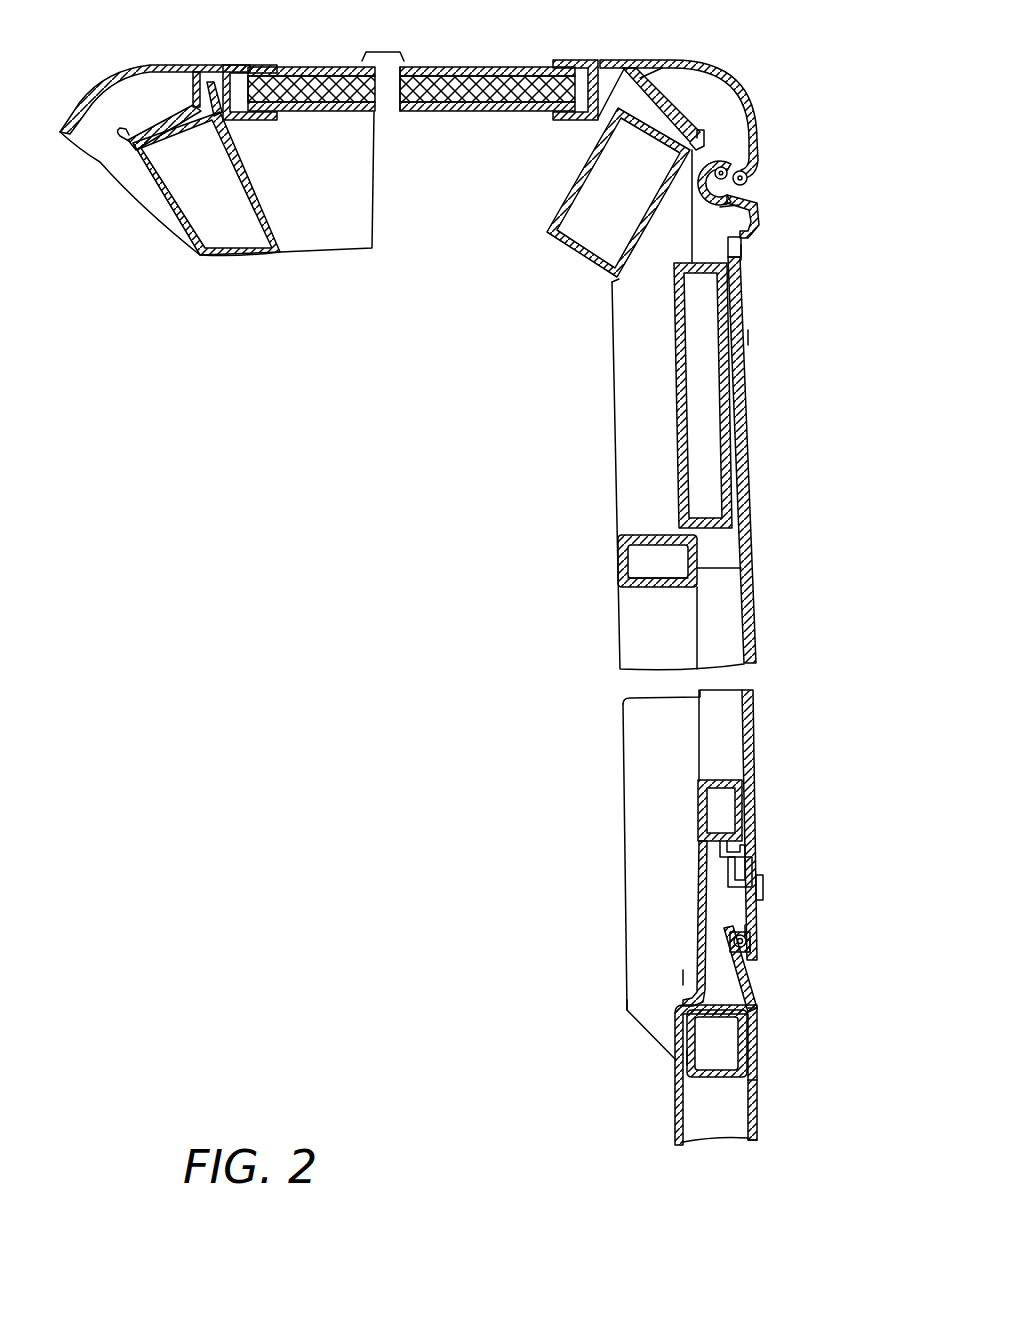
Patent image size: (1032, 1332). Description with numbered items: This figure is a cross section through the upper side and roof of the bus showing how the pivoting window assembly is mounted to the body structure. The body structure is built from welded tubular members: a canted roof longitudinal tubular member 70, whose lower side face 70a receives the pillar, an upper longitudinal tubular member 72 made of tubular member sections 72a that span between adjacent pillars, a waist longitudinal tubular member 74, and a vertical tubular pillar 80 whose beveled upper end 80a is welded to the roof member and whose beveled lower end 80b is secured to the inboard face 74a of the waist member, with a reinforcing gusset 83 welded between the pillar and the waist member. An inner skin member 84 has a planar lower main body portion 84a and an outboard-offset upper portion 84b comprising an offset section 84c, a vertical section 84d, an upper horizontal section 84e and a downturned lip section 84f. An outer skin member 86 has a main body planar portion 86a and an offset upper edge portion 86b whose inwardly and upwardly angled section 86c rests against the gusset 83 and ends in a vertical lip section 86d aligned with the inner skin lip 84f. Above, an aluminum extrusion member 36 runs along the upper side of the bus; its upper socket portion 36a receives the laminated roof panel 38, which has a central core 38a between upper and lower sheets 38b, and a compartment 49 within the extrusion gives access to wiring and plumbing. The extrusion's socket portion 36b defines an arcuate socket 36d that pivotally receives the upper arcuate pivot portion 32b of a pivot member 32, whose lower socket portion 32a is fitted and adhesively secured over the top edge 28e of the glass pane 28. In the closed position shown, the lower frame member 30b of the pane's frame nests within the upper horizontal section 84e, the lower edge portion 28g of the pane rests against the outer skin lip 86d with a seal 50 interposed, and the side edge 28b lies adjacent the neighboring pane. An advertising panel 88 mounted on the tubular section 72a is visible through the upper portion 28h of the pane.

The glass pane 28 is at (758, 607).
The side edge 28b is at (795, 520).
The top edge 28e is at (748, 253).
The lower edge portion 28g is at (754, 928).
The upper portion 28h is at (748, 340).
The lower frame member 30b is at (700, 790).
The pivot member 32 is at (762, 207).
The lower socket portion 32a is at (757, 236).
The upper arcuate pivot portion 32b is at (720, 207).
The extrusion member 36 is at (130, 60).
The upper socket portion 36a is at (236, 64).
The socket portion 36b is at (750, 176).
The arcuate socket 36d is at (735, 155).
The roof panel 38 is at (460, 68).
The core 38a is at (290, 80).
The upper and lower sheets 38b is at (318, 113).
The compartment 49 is at (658, 84).
The seal 50 is at (760, 905).
The roof longitudinal tubular member 70 is at (545, 248).
The side panel upper edge 70a is at (603, 286).
The upper longitudinal tubular member 72 is at (612, 550).
The tubular member section 72a is at (635, 588).
The waist longitudinal tubular member 74 is at (724, 1084).
The inboard face 74a is at (685, 1058).
The vertical tubular pillar 80 is at (615, 713).
The upper end 80a is at (662, 218).
The lower end 80b is at (632, 1010).
The reinforcing gusset 83 is at (757, 1000).
The inner skin member 84 is at (668, 1121).
The lower main body portion 84a is at (683, 1093).
The upper portion 84b is at (680, 975).
The offset section 84c is at (686, 1003).
The vertical section 84d is at (702, 882).
The upper horizontal section 84e is at (715, 856).
The downturned lip section 84f is at (745, 858).
The outer skin member 86 is at (759, 1140).
The main body planar portion 86a is at (759, 1086).
The offset upper edge portion 86b is at (760, 982).
The inwardly and upwardly angled section 86c is at (758, 1012).
The vertical lip section 86d is at (727, 938).
The panel 88 is at (670, 338).